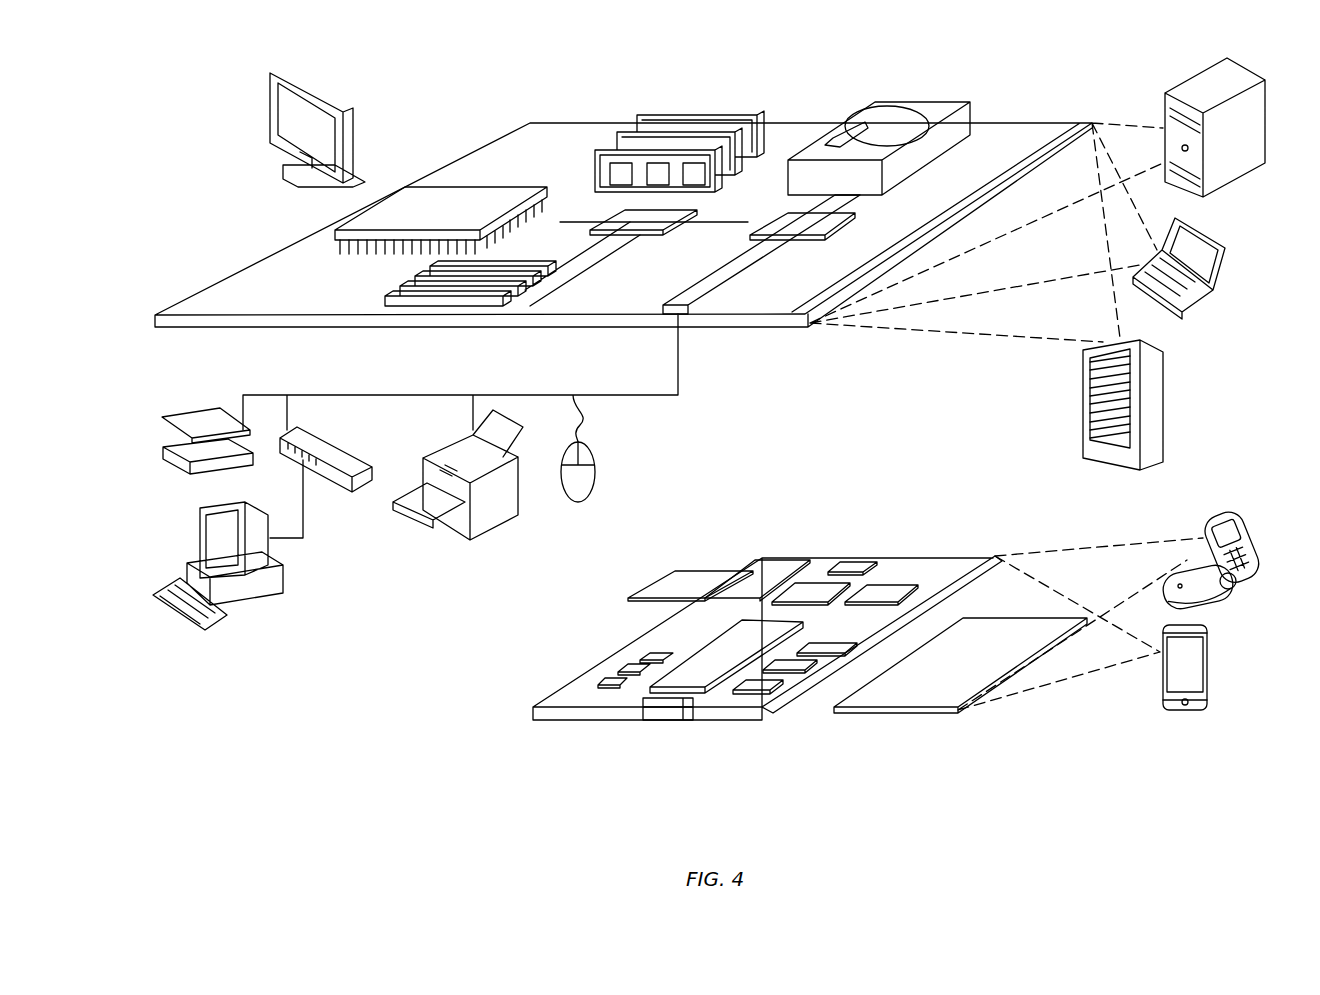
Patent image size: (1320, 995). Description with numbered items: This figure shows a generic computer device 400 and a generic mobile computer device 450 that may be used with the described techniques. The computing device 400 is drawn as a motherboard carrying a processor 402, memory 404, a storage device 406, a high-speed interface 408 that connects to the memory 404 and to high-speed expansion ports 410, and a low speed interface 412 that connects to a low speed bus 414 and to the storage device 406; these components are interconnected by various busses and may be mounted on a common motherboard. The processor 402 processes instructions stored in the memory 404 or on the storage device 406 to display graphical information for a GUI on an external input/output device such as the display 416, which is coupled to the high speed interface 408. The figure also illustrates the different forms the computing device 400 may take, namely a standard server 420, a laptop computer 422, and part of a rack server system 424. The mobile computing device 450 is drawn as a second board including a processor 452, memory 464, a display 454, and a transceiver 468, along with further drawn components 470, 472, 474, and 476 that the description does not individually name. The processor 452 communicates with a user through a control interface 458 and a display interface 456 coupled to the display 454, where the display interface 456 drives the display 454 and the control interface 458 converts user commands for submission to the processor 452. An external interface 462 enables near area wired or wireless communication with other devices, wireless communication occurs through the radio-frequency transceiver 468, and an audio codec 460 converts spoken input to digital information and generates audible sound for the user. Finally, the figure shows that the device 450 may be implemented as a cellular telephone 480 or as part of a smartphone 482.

The computing device 400 is at (455, 94).
The processor 402 is at (345, 236).
The memory 404 is at (643, 117).
The storage device 406 is at (876, 102).
The high-speed interface 408 is at (612, 218).
The high-speed expansion ports 410 is at (385, 288).
The low speed interface 412 is at (787, 222).
The low speed bus 414 is at (690, 315).
The display 416 is at (277, 74).
The standard server 420 is at (1165, 110).
The laptop computer 422 is at (1226, 238).
The rack server system 424 is at (1083, 428).
The mobile computer device 450 is at (512, 712).
The processor 452 is at (700, 694).
The display 454 is at (924, 696).
The display interface 456 is at (763, 688).
The control interface 458 is at (798, 665).
The audio codec 460 is at (820, 645).
The external interface 462 is at (667, 708).
The memory 464 is at (630, 662).
The transceiver 468 is at (886, 590).
The antenna chip 470 is at (865, 566).
The power module 472 is at (748, 570).
The battery module 474 is at (668, 572).
The wireless chip 476 is at (813, 590).
The cellular telephone 480 is at (1213, 515).
The smartphone 482 is at (1160, 690).